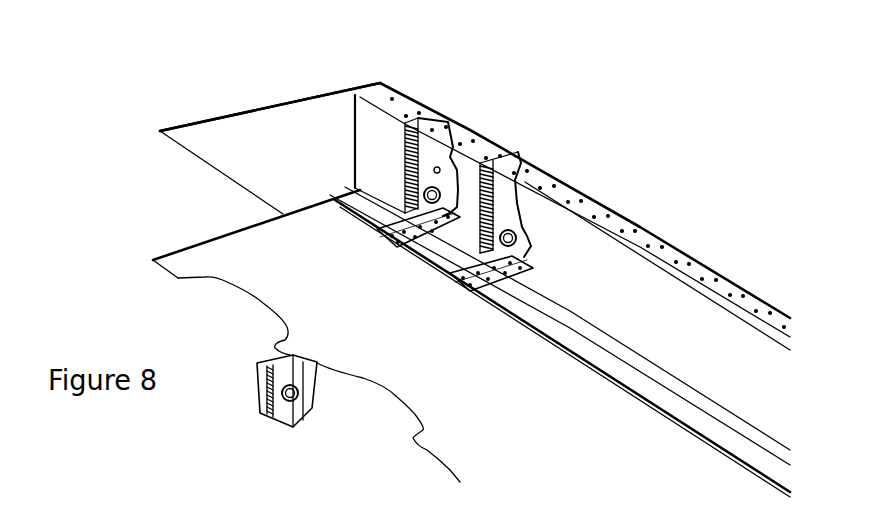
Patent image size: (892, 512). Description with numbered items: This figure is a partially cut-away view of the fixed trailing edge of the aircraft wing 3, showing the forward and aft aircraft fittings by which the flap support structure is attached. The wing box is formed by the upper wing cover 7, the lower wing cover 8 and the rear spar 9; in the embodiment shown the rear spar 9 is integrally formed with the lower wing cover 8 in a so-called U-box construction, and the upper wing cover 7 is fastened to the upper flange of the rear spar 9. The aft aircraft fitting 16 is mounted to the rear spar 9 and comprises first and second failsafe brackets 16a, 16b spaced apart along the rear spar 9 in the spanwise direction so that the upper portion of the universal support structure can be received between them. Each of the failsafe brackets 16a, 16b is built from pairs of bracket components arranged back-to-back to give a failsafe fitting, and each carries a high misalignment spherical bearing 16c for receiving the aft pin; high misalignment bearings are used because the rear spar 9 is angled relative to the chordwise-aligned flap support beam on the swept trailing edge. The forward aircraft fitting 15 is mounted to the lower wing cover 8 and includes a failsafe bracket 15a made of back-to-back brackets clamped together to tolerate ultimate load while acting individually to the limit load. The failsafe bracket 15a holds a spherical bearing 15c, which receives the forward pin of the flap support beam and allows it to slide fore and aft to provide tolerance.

The wing 3 is at (238, 90).
The upper wing cover 7 is at (288, 117).
The lower wing cover 8 is at (252, 257).
The rear spar 9 is at (677, 293).
The forward aircraft fitting 15 is at (252, 404).
The failsafe bracket 15a is at (303, 378).
The spherical bearing 15c is at (300, 403).
The aft aircraft fitting 16 is at (522, 119).
The first failsafe bracket 16a is at (510, 198).
The second failsafe bracket 16b is at (442, 142).
The high misalignment spherical bearing 16c is at (418, 200).